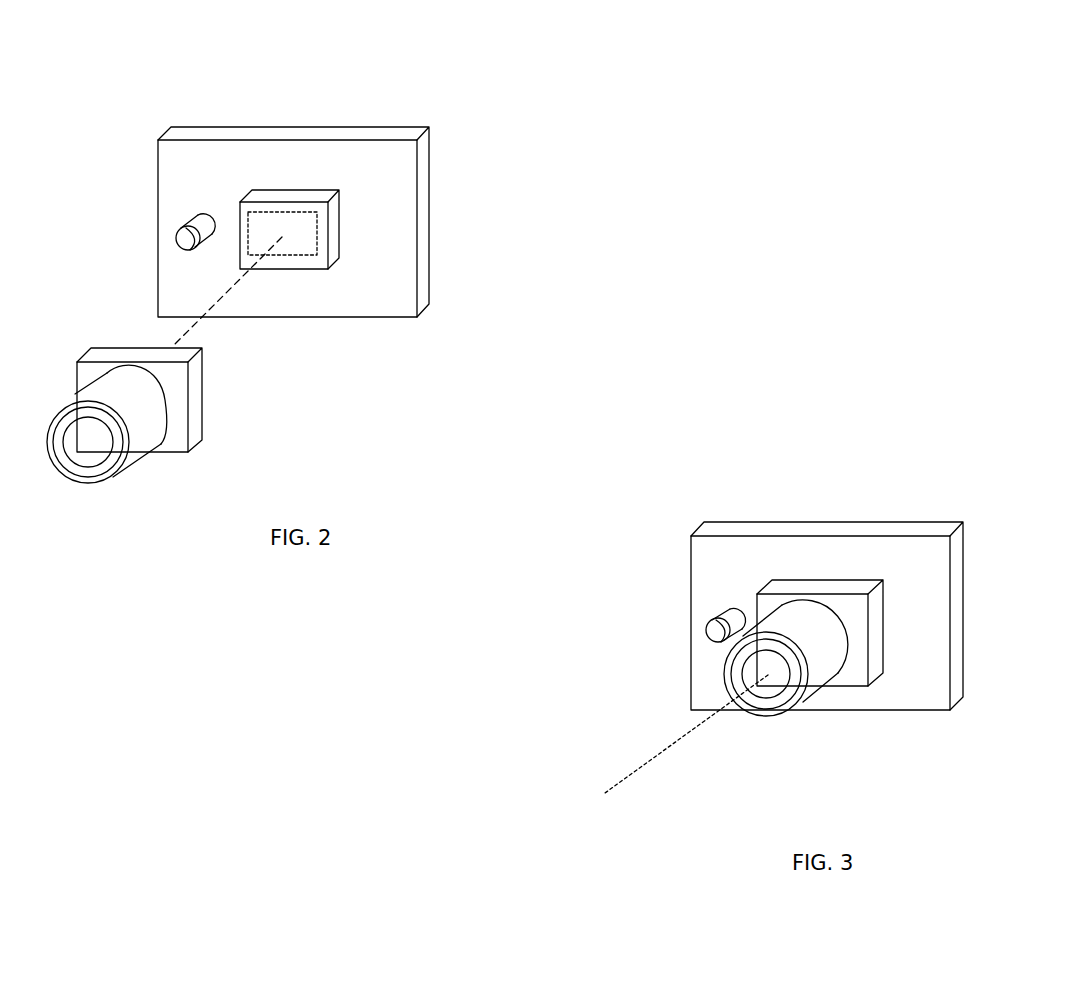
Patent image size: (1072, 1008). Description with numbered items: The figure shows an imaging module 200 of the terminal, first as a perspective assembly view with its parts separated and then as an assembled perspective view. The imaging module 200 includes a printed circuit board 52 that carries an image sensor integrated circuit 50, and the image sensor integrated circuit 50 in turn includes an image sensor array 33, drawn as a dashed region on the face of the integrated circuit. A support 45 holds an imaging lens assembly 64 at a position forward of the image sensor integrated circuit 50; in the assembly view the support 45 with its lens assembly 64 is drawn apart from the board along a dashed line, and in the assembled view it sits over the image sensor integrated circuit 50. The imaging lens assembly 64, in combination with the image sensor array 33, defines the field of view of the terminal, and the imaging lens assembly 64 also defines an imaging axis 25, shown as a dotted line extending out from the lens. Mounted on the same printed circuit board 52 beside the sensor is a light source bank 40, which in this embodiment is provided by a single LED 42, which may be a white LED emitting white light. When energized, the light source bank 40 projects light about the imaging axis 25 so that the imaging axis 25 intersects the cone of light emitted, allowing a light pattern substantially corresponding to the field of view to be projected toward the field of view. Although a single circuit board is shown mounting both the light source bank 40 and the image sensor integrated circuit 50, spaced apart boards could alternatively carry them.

In FIG. 2, the imaging module 200 is at (433, 113).
In FIG. 3, the imaging module 200 is at (975, 499).
In FIG. 2, the printed circuit board 52 is at (403, 200).
In FIG. 3, the printed circuit board 52 is at (938, 613).
In FIG. 2, the image sensor integrated circuit 50 is at (333, 254).
In FIG. 3, the image sensor integrated circuit 50 is at (820, 633).
In FIG. 2, the image sensor array 33 is at (300, 231).
In FIG. 2, the light source bank 40 is at (185, 218).
In FIG. 3, the light source bank 40 is at (718, 605).
In FIG. 2, the LED 42 is at (184, 236).
In FIG. 3, the LED 42 is at (708, 632).
In FIG. 2, the support 45 is at (170, 444).
In FIG. 3, the support 45 is at (853, 673).
In FIG. 2, the imaging lens assembly 64 is at (85, 453).
In FIG. 3, the imaging lens assembly 64 is at (770, 688).
In FIG. 3, the imaging axis 25 is at (662, 753).